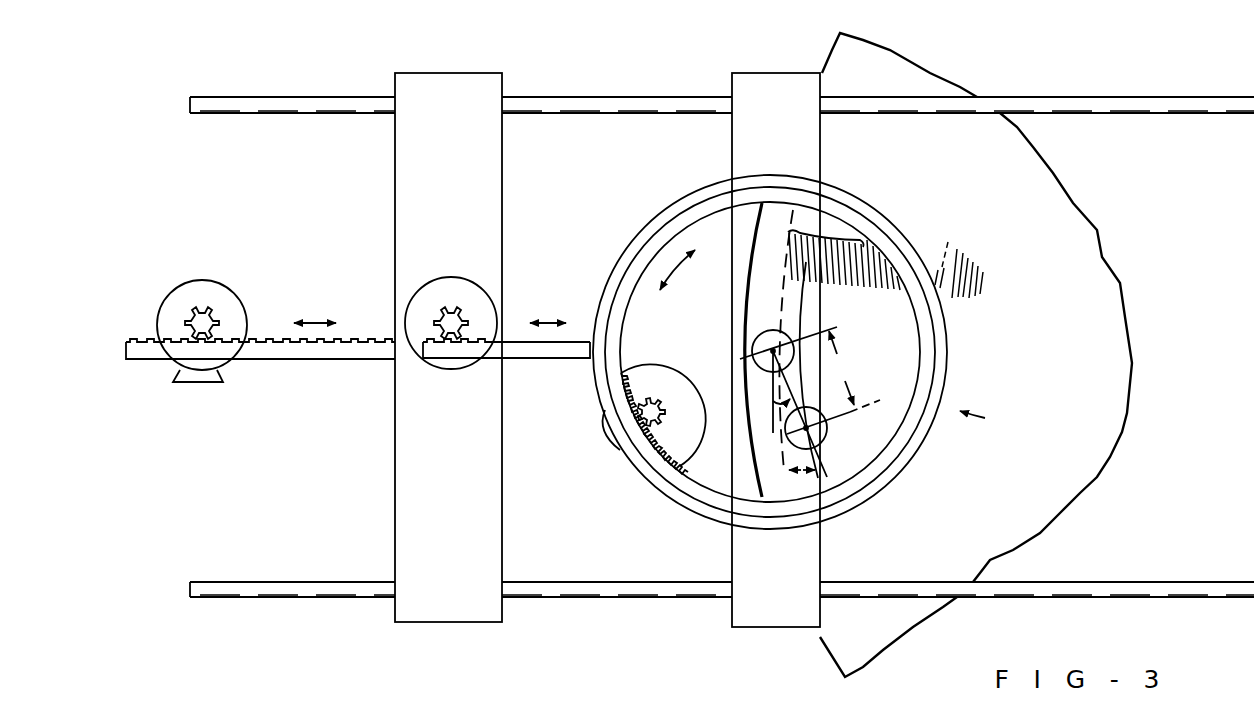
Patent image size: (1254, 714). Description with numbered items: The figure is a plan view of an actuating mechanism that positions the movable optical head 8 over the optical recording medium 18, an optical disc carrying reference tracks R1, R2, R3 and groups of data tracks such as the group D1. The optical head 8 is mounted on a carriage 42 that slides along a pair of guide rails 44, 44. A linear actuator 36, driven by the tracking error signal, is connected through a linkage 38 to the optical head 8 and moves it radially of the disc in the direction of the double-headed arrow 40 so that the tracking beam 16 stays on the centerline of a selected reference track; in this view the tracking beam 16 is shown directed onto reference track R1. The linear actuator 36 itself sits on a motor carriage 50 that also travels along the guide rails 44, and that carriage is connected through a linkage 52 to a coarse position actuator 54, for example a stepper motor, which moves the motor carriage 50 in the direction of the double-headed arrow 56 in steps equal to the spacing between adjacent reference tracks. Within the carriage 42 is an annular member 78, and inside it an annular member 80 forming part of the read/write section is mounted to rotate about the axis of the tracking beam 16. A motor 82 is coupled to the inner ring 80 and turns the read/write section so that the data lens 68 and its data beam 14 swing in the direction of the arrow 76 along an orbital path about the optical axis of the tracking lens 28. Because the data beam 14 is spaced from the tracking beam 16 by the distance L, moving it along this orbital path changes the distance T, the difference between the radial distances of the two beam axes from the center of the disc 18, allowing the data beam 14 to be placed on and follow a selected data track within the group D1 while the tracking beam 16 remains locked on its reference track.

The optical head 8 is at (985, 418).
The data beam 14 is at (828, 430).
The tracking beam 16 is at (768, 352).
The optical recording medium 18 is at (1125, 430).
The tracking lens 28 is at (753, 344).
The linear actuator 36 is at (458, 278).
The linkage 38 is at (567, 360).
The double-headed arrow 40 is at (545, 320).
The carriage 42 is at (748, 73).
The guide rails 44 is at (603, 97).
The motor carriage 50 is at (440, 73).
The linkage 52 is at (305, 360).
The coarse position actuator 54 is at (197, 282).
The double-headed arrow 56 is at (316, 323).
The data lens 68 is at (783, 422).
The arrow 76 is at (672, 272).
The annular member 78 is at (710, 193).
The annular member 80 is at (680, 226).
The motor 82 is at (643, 370).
The reference track R1 is at (747, 302).
The reference track R2 is at (857, 293).
The reference track R3 is at (952, 240).
The group of data tracks D1 is at (828, 235).
The distance between light beams L is at (841, 368).
The distance T is at (802, 472).